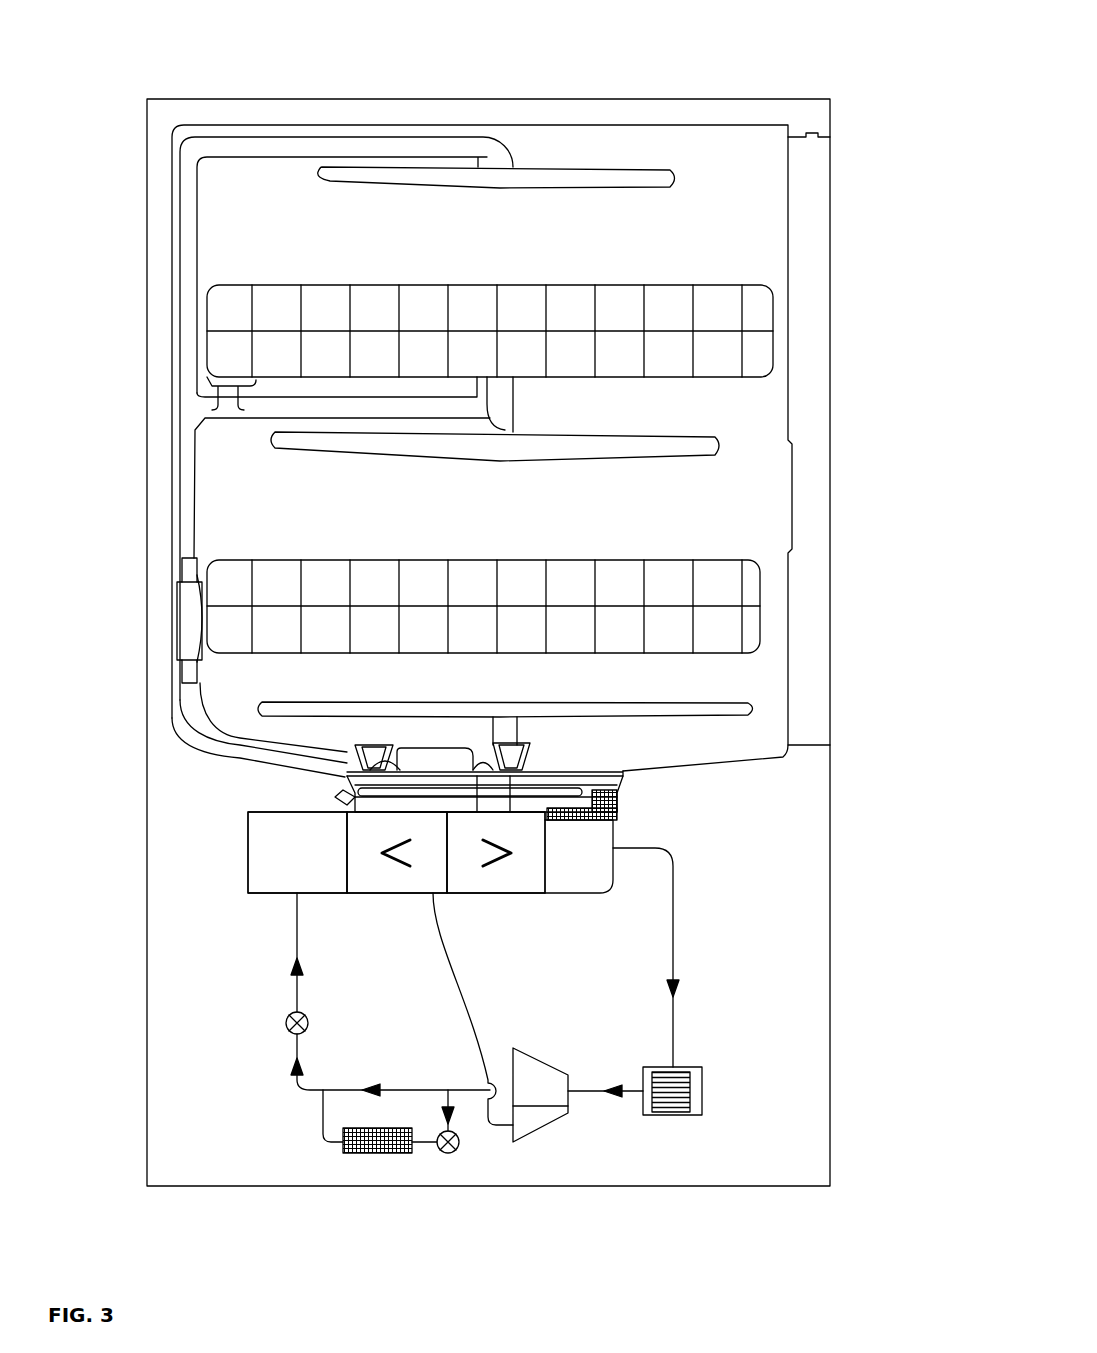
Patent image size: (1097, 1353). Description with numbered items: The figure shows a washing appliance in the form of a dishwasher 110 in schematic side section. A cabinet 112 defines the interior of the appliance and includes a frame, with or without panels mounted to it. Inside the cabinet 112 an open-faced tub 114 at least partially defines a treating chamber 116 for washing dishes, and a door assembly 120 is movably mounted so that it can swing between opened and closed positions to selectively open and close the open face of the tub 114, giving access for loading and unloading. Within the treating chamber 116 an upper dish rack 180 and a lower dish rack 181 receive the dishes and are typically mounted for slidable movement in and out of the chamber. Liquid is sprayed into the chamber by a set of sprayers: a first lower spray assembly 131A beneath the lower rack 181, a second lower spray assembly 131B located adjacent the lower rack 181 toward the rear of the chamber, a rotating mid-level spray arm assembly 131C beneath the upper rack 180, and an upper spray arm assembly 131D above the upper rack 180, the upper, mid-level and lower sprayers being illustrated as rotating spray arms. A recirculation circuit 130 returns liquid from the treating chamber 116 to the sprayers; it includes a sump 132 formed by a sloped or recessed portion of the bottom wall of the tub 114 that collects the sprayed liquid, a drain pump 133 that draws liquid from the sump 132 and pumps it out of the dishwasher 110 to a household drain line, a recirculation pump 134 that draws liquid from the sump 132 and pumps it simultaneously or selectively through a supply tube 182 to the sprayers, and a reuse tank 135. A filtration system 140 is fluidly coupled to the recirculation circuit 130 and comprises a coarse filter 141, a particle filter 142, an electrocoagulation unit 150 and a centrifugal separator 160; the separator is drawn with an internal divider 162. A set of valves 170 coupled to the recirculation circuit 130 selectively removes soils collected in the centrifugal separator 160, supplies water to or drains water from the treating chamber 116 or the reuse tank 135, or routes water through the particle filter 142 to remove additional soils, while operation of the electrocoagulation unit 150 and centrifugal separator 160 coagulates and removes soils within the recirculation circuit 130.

The dishwasher 110 is at (198, 57).
The cabinet 112 is at (145, 128).
The tub 114 is at (657, 785).
The treating chamber 116 is at (715, 527).
The door assembly 120 is at (845, 503).
The recirculation circuit 130 is at (180, 872).
The first lower spray assembly 131A is at (673, 177).
The second lower spray assembly 131B is at (720, 445).
The rotating mid-level spray arm assembly 131C is at (753, 706).
The upper spray arm assembly 131D is at (188, 645).
The sump 132 is at (613, 867).
The drain pump 133 is at (412, 895).
The recirculation pump 134 is at (517, 895).
The reuse tank 135 is at (316, 873).
The filtration system 140 is at (805, 982).
The coarse filter 141 is at (617, 808).
The particle filter 142 is at (407, 1147).
The electrocoagulation unit 150 is at (725, 1081).
The centrifugal separator 160 is at (550, 1036).
The fan motor 162 is at (538, 1117).
The set of valves 170 is at (290, 1030).
The upper dish rack 180 is at (773, 325).
The lower dish rack 181 is at (760, 600).
The supply tube 182 is at (186, 512).